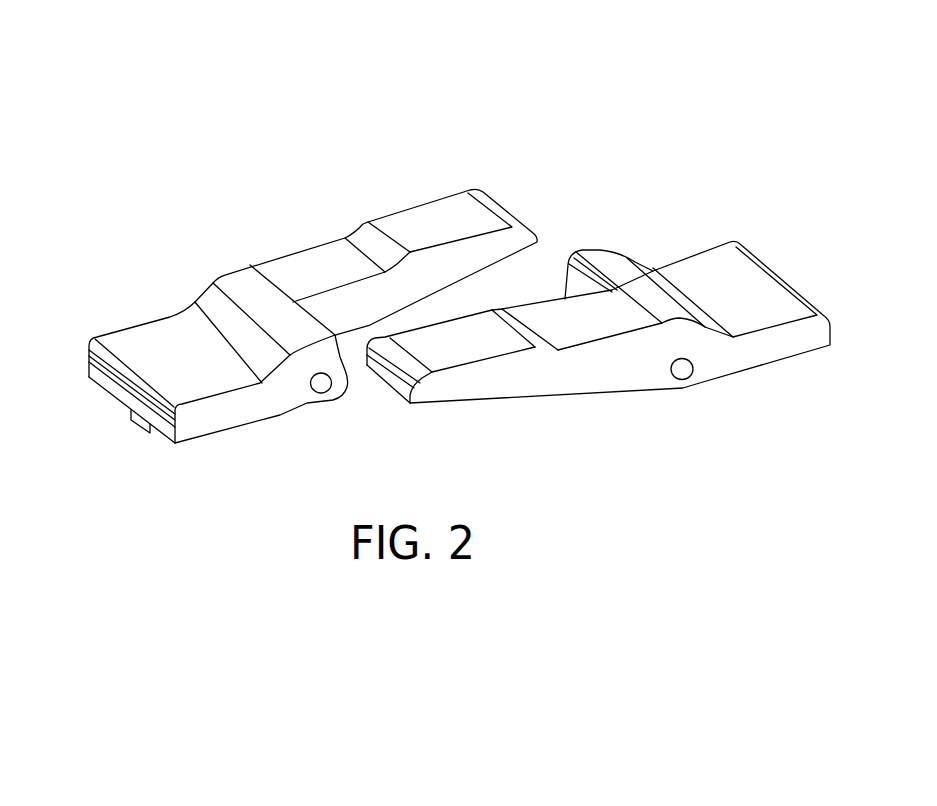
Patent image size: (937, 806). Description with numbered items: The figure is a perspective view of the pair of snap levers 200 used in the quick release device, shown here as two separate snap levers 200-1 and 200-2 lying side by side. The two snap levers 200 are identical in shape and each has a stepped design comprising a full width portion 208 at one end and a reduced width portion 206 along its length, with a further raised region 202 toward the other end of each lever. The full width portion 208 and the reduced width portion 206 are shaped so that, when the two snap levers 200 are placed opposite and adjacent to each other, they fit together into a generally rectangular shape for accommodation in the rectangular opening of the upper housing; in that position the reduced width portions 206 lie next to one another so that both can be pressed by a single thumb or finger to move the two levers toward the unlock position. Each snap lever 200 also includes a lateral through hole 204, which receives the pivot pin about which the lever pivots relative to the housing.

The snap lever 200 is at (119, 44).
The snap lever 200-1 is at (172, 437).
The snap lever 200-2 is at (792, 348).
The raised platform 202 is at (437, 268).
The lateral through hole 204 is at (322, 384).
The reduced width portion 206 is at (328, 262).
The full width portion 208 is at (142, 345).